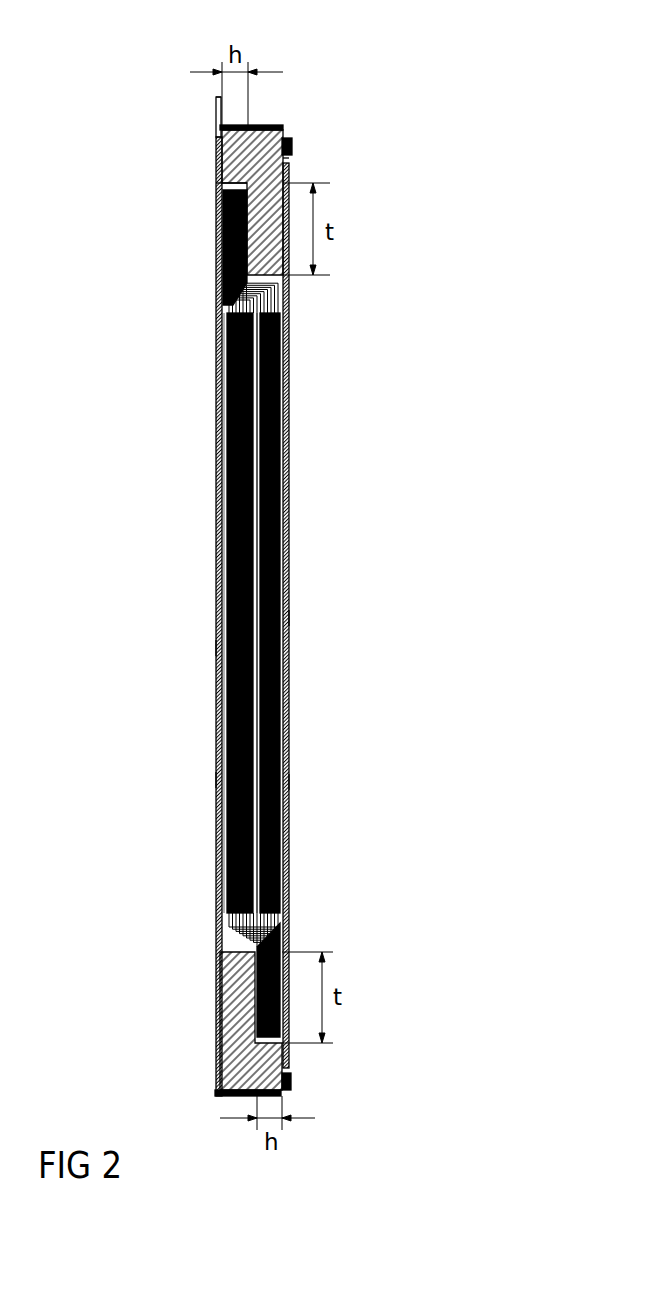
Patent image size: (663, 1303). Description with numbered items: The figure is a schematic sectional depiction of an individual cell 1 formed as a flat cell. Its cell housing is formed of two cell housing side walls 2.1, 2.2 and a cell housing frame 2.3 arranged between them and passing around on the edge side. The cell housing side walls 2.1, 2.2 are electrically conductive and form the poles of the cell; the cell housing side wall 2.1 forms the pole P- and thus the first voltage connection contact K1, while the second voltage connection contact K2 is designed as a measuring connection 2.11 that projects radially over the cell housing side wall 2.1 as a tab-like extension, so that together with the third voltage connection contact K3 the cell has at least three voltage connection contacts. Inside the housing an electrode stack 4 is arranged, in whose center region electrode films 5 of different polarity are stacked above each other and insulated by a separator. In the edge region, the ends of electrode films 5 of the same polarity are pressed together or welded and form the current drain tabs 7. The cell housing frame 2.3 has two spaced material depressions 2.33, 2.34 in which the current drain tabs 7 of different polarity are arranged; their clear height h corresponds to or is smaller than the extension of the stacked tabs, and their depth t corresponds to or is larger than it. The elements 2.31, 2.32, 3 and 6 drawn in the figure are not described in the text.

The individual cell 1 is at (538, 50).
The cell housing side wall 2.1 is at (216, 388).
The measuring connection 2.11 is at (216, 125).
The cell housing side wall 2.2 is at (288, 428).
The cell housing frame 2.3 is at (284, 133).
The cover plate 2.31 is at (282, 125).
The end cap shoulder 2.32 is at (290, 160).
The material depression 2.33 is at (216, 185).
The material depression 2.34 is at (283, 1043).
The seal 3 is at (292, 147).
The electrode stack 4 is at (222, 505).
The electrode films 5 is at (227, 568).
The second electrode 6 is at (226, 720).
The current drain tab 7 is at (222, 243).
The first voltage connection contact K1 is at (216, 780).
The second voltage connection contact K2 is at (216, 103).
The third voltage connection contact K3 is at (288, 782).
The pole P- is at (216, 648).